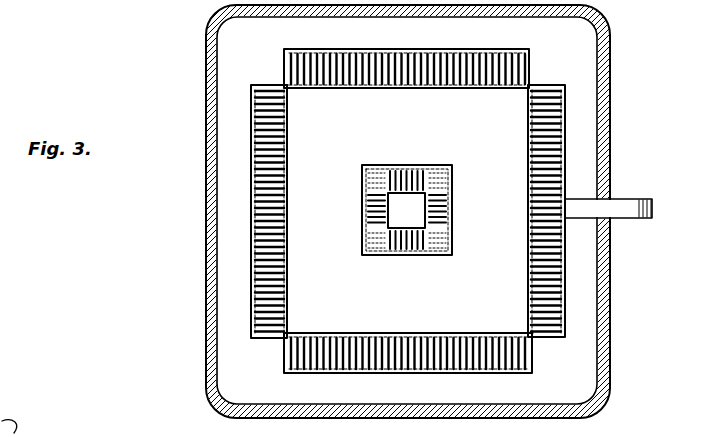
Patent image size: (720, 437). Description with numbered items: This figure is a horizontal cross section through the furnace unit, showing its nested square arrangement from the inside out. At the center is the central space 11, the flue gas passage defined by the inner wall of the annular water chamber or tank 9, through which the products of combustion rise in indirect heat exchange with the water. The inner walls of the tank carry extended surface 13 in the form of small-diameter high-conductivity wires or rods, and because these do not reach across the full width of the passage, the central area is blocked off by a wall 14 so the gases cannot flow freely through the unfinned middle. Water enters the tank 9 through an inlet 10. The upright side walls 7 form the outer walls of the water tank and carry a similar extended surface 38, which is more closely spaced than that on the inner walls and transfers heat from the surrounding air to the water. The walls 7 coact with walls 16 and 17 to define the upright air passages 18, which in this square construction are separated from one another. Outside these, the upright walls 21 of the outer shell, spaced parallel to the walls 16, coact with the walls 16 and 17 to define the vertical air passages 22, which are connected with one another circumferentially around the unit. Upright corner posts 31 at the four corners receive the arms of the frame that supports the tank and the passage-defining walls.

The upright side walls 7 is at (430, 89).
The water chamber or tank 9 is at (344, 157).
The inlet 10 is at (652, 208).
The central space 11 is at (413, 210).
The extended surface 13 is at (450, 206).
The wall 14 is at (414, 209).
The outer walls 16 is at (404, 52).
The walls 17 is at (277, 66).
The upright air passages 18 is at (447, 35).
The upright walls 21 is at (328, 18).
The vertical air passages 22 is at (410, 212).
The upright corner posts 31 is at (409, 209).
The extended surface 38 is at (357, 54).